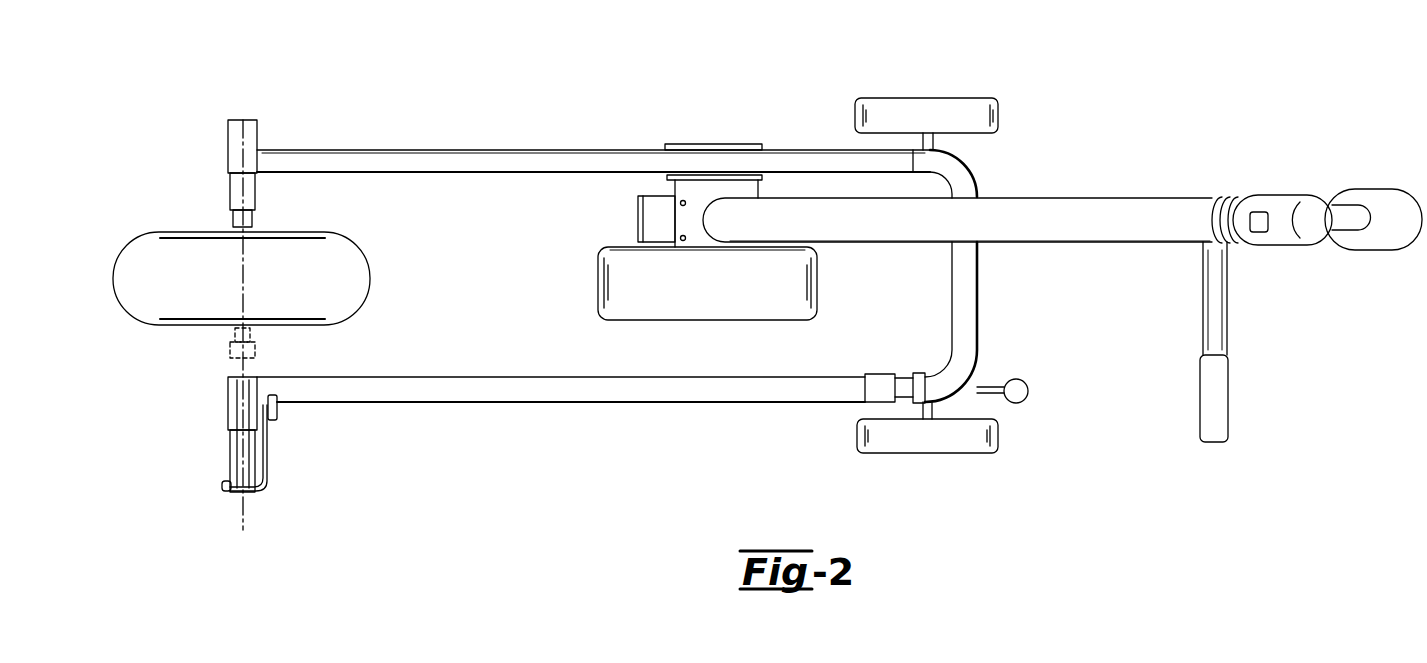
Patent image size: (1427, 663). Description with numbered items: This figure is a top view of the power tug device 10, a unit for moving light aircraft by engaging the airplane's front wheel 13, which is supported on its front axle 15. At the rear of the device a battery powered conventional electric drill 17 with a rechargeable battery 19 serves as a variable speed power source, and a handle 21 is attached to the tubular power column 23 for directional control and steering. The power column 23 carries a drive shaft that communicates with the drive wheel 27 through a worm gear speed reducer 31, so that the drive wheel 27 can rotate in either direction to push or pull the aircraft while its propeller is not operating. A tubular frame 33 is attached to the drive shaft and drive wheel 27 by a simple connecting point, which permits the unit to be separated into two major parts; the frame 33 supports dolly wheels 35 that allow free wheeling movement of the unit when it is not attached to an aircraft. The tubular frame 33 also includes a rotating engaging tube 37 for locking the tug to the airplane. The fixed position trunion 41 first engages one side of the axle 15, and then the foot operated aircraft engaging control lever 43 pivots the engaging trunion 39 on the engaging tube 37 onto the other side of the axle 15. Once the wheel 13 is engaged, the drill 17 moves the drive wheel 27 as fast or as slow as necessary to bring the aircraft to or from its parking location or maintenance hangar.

The device 10 is at (623, 511).
The front wheel 13 is at (144, 277).
The front axle 15 is at (243, 285).
The electric drill 17 is at (1291, 205).
The rechargeable battery 19 is at (1405, 192).
The handle 21 is at (1215, 402).
The tubular power column 23 is at (1043, 208).
The drive wheel 27 is at (600, 278).
The worm gear speed reducer 31 is at (655, 215).
The tubular frame 33 is at (432, 160).
The dolly wheels 35 is at (933, 107).
The rotating engaging tube 37 is at (428, 392).
The engaging trunion 39 is at (228, 405).
The fixed position trunion 41 is at (238, 186).
The aircraft engaging control lever 43 is at (987, 387).